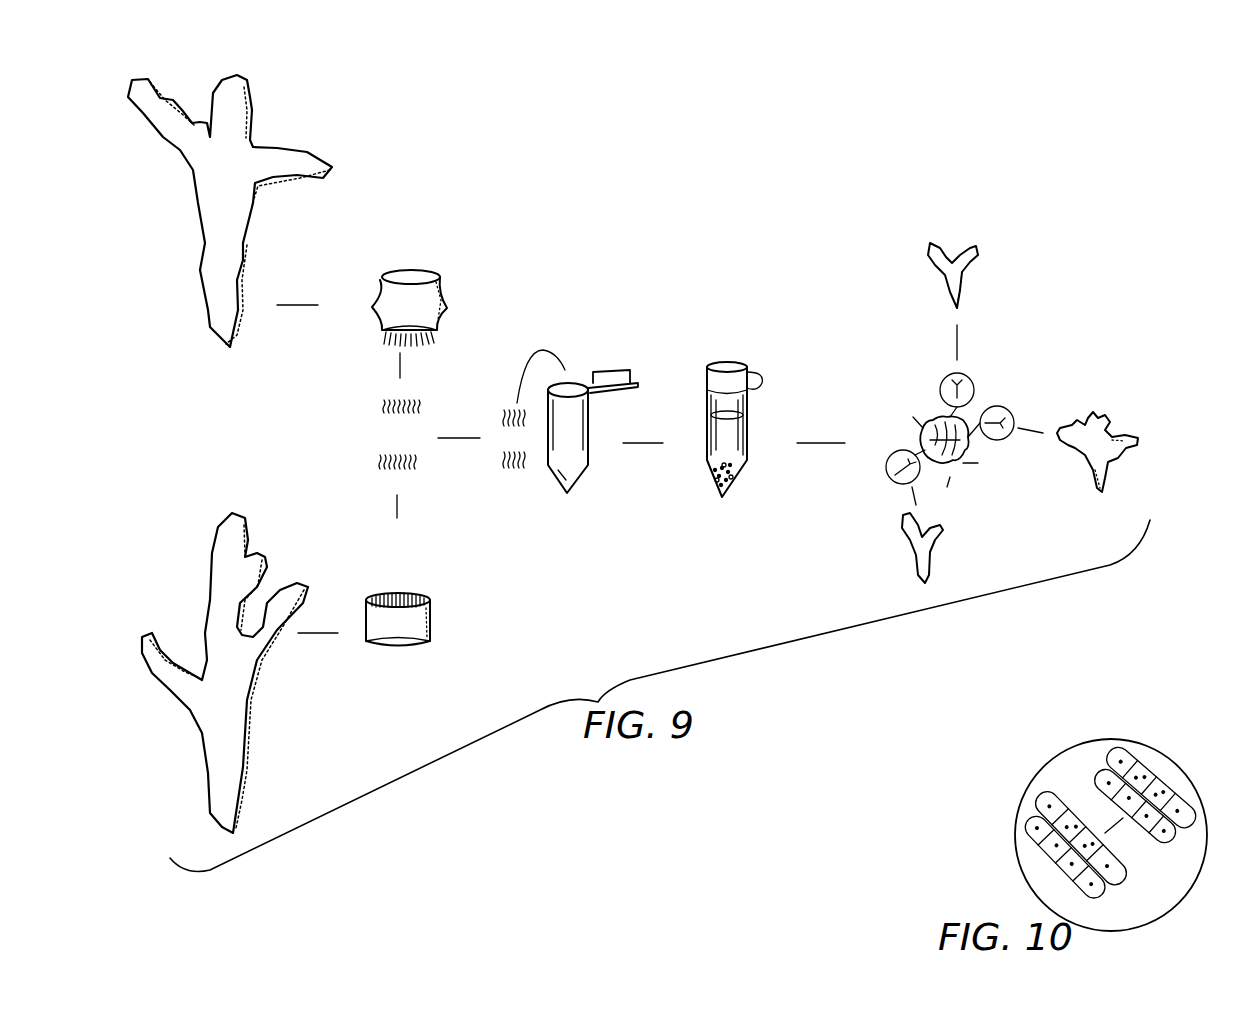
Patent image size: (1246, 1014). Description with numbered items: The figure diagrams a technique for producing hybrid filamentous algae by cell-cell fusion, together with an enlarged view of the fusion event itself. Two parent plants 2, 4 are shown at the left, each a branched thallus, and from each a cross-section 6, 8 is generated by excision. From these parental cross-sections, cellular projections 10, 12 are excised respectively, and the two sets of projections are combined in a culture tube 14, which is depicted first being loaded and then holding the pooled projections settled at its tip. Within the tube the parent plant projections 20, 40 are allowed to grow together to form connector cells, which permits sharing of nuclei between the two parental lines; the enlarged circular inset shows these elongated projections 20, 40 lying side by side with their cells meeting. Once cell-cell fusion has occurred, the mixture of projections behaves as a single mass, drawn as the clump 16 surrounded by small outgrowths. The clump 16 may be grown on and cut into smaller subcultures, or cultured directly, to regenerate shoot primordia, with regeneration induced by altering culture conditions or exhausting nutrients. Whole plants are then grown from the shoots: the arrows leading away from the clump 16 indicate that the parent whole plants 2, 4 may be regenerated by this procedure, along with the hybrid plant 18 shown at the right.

In FIG. 9, the parent plant 2 is at (198, 187).
In FIG. 9, the parent plant 4 is at (208, 607).
In FIG. 9, the cross-section 6 is at (390, 287).
In FIG. 9, the cross-section 8 is at (373, 617).
In FIG. 9, the cellular projections 10 is at (380, 403).
In FIG. 9, the cellular projections 12 is at (378, 458).
In FIG. 9, the culture tube 14 is at (580, 473).
In FIG. 9, the clump 16 is at (918, 405).
In FIG. 9, the hybrid plant 18 is at (1120, 437).
In FIG. 10, the parent plant projection 20 is at (1137, 770).
In FIG. 10, the parent plant projection 40 is at (1102, 797).